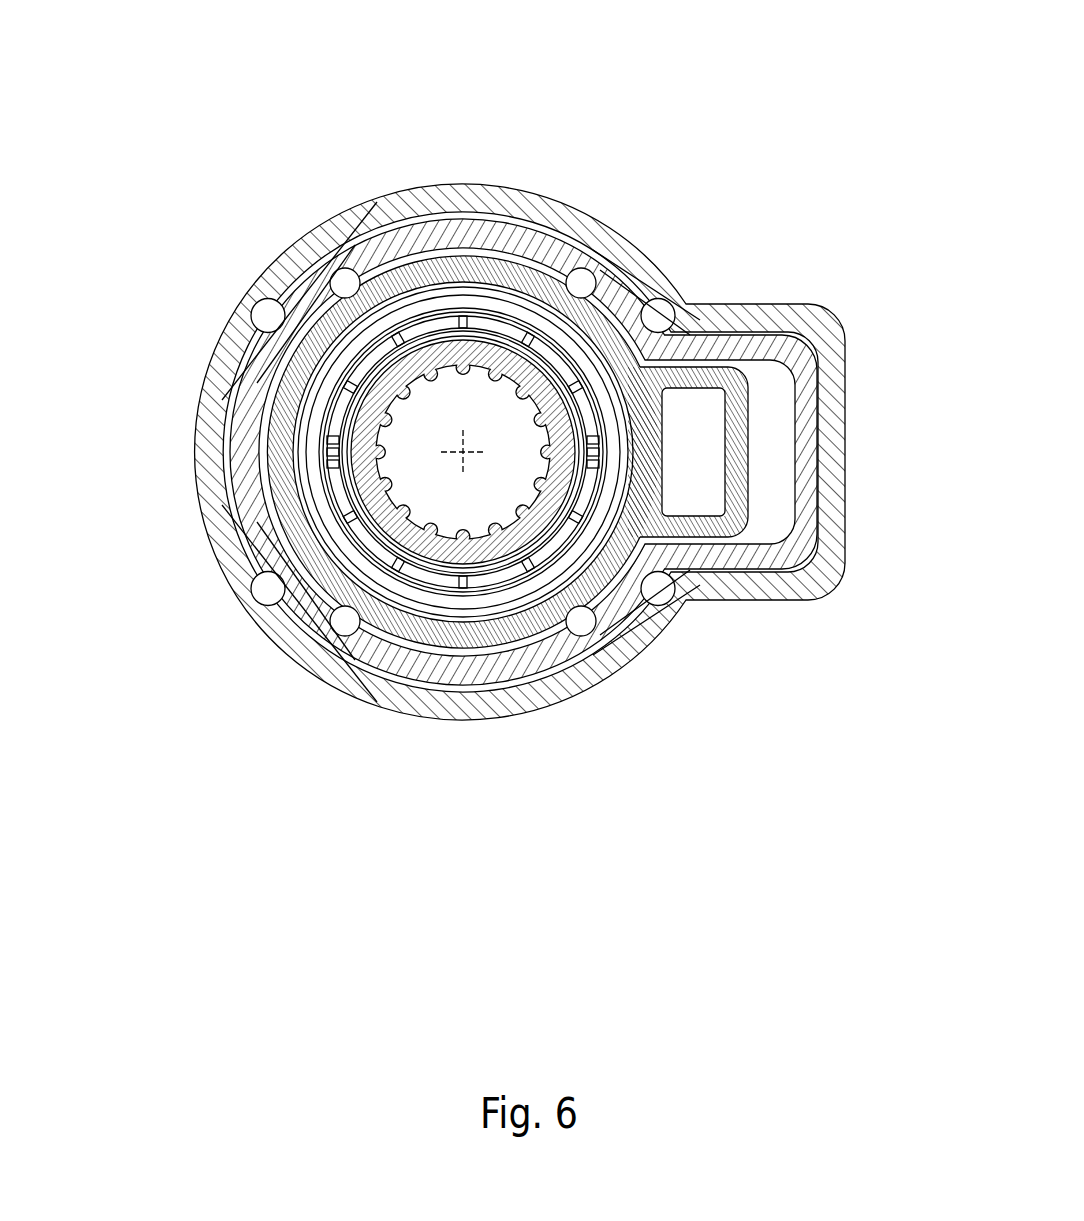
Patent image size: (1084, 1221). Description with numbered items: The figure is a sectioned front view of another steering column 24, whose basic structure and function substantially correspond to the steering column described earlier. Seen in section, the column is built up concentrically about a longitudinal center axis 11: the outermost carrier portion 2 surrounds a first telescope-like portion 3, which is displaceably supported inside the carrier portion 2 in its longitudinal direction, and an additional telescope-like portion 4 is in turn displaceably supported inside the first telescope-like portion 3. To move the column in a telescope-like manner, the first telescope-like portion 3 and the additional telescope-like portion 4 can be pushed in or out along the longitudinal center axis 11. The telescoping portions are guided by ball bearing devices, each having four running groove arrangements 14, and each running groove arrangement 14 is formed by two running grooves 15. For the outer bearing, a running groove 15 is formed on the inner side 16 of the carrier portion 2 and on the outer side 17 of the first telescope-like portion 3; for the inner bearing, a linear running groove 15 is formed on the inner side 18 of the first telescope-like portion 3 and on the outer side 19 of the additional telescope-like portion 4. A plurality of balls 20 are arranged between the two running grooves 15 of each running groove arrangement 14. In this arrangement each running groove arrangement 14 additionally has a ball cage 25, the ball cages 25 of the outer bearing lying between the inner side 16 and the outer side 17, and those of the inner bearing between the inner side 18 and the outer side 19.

The carrier portion 2 is at (342, 216).
The first telescope-like portion 3 is at (247, 397).
The additional telescope-like portion 4 is at (263, 460).
The longitudinal center axis 11 is at (455, 456).
The running groove arrangement 14 is at (634, 262).
The running groove 15 is at (676, 320).
The inner side 16 is at (498, 206).
The outer side 17 is at (461, 217).
The inner side 18 is at (453, 657).
The outer side 19 is at (520, 650).
The balls 20 is at (584, 636).
The steering column 24 is at (765, 99).
The ball cage 25 is at (381, 245).